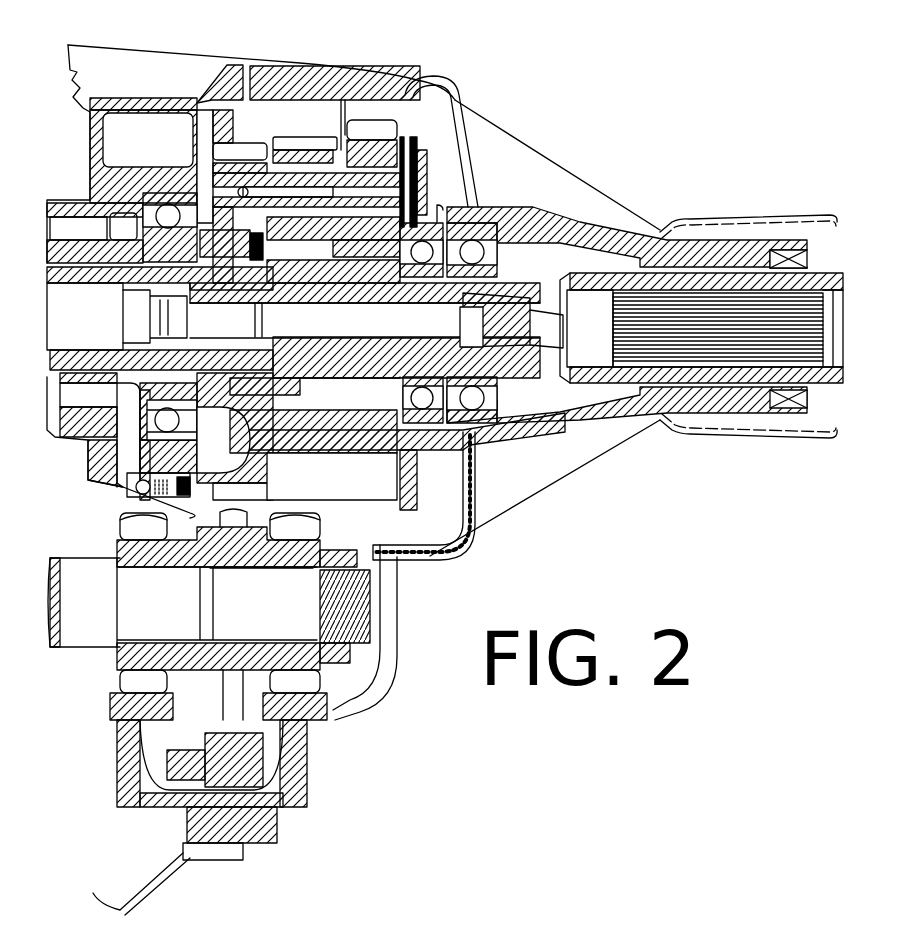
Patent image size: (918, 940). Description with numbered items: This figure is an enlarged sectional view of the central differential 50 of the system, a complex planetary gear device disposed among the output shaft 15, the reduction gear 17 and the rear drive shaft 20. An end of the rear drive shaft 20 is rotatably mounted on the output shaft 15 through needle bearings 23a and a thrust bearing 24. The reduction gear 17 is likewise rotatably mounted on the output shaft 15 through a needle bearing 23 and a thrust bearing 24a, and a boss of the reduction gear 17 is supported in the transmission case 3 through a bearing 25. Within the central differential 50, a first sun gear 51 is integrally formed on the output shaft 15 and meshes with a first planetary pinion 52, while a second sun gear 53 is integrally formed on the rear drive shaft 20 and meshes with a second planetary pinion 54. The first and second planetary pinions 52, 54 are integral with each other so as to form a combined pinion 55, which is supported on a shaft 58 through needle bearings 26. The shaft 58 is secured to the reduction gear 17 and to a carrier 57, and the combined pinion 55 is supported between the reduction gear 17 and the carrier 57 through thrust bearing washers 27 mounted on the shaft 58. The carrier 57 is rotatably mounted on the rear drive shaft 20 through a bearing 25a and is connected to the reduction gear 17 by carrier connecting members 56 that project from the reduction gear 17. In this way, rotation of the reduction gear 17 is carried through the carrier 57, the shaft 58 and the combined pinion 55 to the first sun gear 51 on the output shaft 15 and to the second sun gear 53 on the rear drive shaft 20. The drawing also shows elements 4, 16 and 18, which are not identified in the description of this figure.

The transmission case 3 is at (132, 62).
The transmission housing 4 is at (565, 178).
The output shaft 15 is at (50, 353).
The input shaft 16 is at (62, 624).
The reduction gear 17 is at (227, 147).
The pinion gear 18 is at (255, 776).
The rear drive shaft 20 is at (828, 333).
The needle bearing 23 is at (197, 288).
The needle bearings 23a is at (383, 287).
The thrust bearing 24 is at (330, 300).
The thrust bearing 24a is at (262, 292).
The bearing 25 is at (160, 200).
The bearing 25a is at (447, 265).
The needle bearings 26 is at (288, 172).
The thrust bearing washers 27 is at (268, 150).
The central differential 50 is at (449, 129).
The first sun gear 51 is at (297, 385).
The first planetary pinion 52 is at (318, 145).
The second sun gear 53 is at (365, 383).
The second planetary pinion 54 is at (368, 125).
The combined pinion 55 is at (341, 147).
The carrier connecting members 56 is at (335, 450).
The carrier 57 is at (418, 146).
The shaft 58 is at (418, 187).